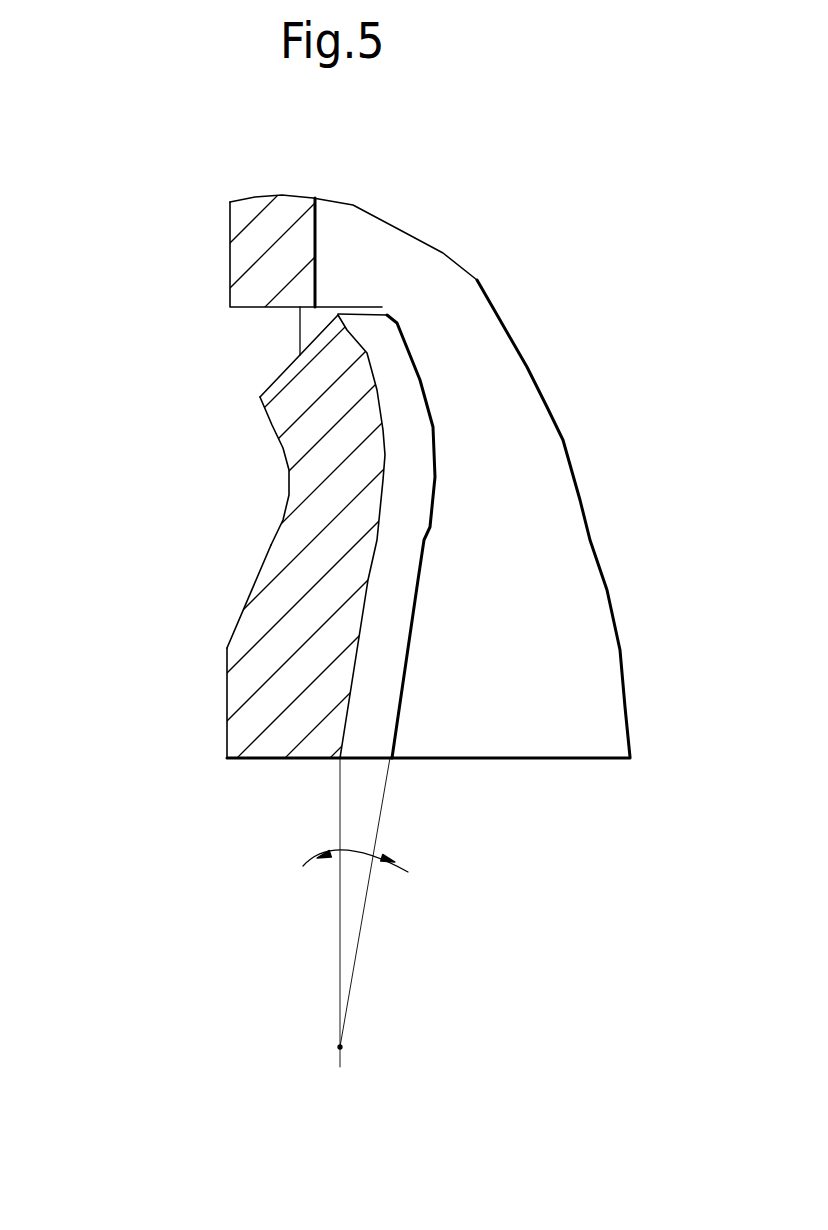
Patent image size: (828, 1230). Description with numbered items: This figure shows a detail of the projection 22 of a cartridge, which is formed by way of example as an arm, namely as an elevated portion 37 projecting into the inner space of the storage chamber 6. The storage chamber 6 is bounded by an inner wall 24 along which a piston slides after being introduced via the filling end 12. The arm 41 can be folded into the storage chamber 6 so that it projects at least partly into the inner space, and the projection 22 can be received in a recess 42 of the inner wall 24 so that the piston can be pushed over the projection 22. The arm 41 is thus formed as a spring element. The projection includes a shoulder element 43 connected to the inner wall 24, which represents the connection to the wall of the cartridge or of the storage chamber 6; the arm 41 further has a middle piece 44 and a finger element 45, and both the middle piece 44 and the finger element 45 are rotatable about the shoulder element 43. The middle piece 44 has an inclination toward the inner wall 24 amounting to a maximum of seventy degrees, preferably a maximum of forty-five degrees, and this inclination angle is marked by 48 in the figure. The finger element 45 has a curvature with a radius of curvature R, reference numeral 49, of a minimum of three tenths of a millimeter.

The storage chamber 6 is at (534, 622).
The filling end 12 is at (260, 762).
The projection 22 is at (482, 422).
The inner wall 24 is at (316, 253).
The elevated portion 37 is at (202, 705).
The arm 41 is at (267, 607).
The recess 42 is at (262, 330).
The shoulder element 43 is at (328, 703).
The middle piece 44 is at (343, 548).
The finger element 45 is at (390, 372).
The inclination angle 48 is at (362, 923).
The radius of curvature 49 is at (220, 458).
The radius of curvature R is at (373, 397).